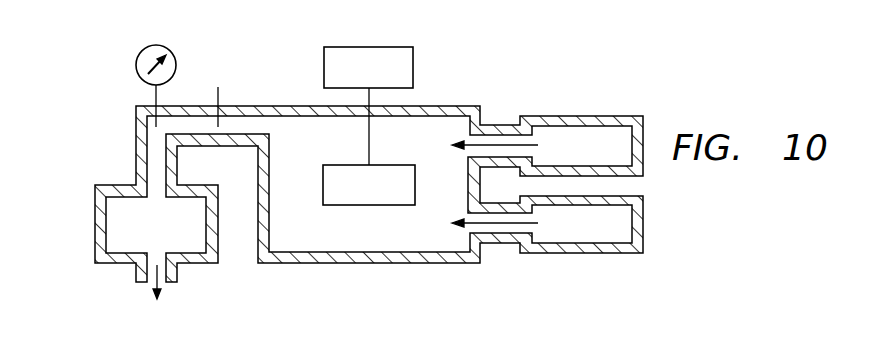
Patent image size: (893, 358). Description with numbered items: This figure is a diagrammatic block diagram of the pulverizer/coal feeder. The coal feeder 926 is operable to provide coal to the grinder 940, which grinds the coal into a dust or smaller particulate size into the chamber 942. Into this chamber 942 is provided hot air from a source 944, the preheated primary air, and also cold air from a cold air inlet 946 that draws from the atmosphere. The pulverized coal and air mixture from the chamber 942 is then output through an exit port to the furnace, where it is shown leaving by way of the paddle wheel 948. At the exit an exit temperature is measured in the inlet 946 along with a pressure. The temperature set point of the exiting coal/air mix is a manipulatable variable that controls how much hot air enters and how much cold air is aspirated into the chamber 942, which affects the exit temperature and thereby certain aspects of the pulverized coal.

The coal feeder 926 is at (370, 47).
The grinder 940 is at (367, 206).
The chamber 942 is at (369, 174).
The hot air source 944 is at (572, 135).
The cold air inlet 946 is at (247, 123).
The paddle wheel 948 is at (113, 230).